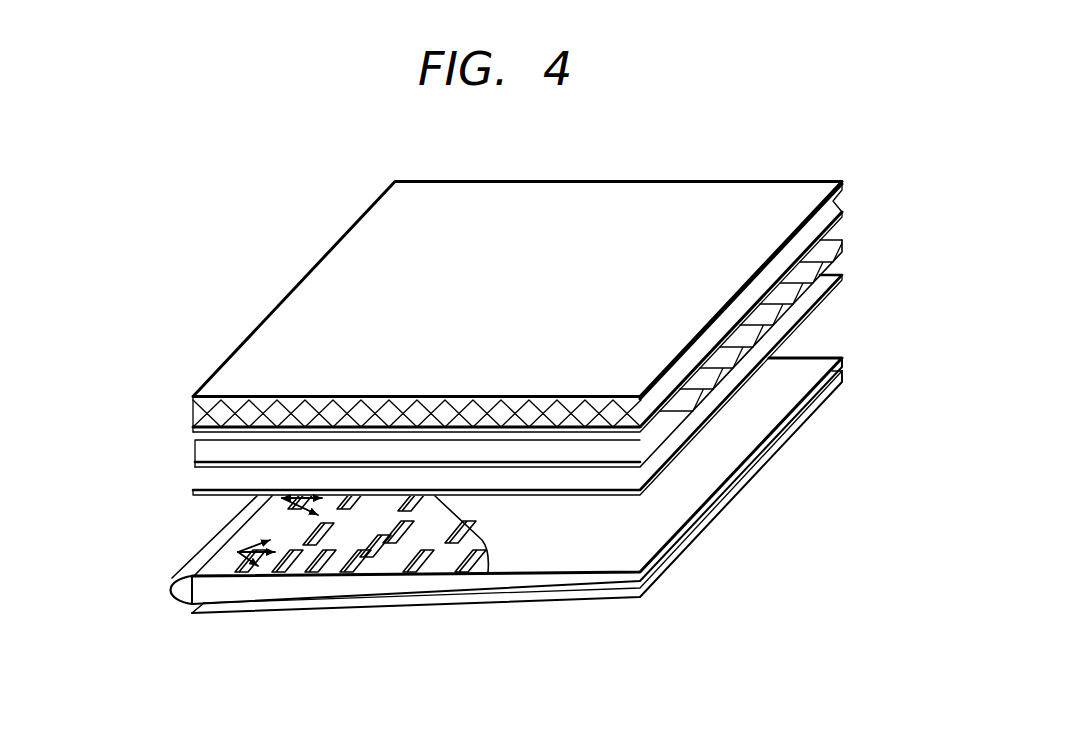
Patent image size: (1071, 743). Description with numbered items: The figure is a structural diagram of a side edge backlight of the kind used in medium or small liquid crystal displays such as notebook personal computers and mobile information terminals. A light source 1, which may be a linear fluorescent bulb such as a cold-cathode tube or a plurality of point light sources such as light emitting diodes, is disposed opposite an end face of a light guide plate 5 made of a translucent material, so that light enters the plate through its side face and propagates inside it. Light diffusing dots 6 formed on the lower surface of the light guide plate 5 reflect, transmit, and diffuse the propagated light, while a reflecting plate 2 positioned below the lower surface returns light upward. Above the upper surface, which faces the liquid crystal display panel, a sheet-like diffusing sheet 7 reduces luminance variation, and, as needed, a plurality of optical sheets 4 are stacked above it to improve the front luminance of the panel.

The light source 1 is at (182, 597).
The reflecting plate 2 is at (266, 612).
The optical sheets 4 is at (857, 173).
The light guide plate 5 is at (315, 587).
The light diffusing dots 6 is at (238, 552).
The diffusing sheet 7 is at (842, 282).